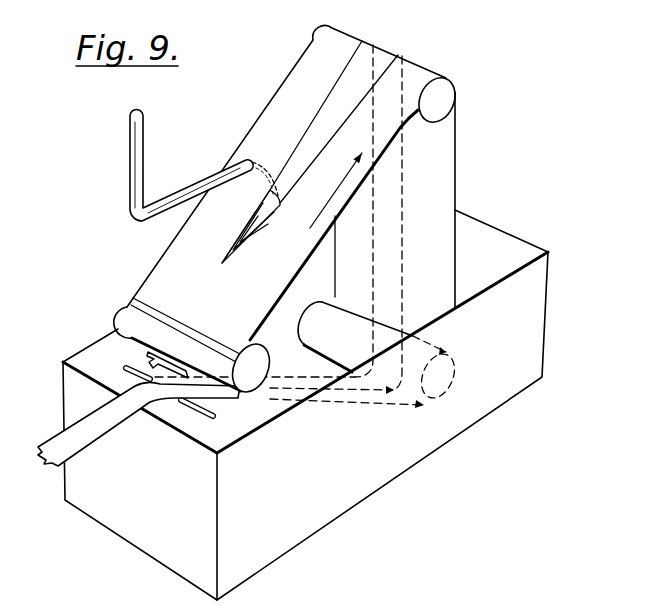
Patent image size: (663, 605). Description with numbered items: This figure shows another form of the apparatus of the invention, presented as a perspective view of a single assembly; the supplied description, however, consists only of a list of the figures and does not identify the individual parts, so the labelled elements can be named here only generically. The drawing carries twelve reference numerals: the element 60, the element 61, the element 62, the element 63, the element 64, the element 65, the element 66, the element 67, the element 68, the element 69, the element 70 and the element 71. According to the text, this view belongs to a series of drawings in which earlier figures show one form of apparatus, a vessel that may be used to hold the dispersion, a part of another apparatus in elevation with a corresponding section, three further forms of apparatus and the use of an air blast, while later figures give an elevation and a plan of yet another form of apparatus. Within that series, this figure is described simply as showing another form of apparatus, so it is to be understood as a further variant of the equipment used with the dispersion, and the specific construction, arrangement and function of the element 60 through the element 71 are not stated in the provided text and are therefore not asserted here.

The conveyor belt 60 is at (318, 244).
The lower front roller 61 is at (268, 366).
The upper roller 62 is at (420, 118).
The lower rear roller 63 is at (455, 378).
The housing block 64 is at (545, 342).
The hook arm vertical leg 65 is at (145, 121).
The hook arm horizontal leg 66 is at (172, 196).
The guide strip on belt 67 is at (330, 99).
The workpiece strip 68 is at (97, 447).
The cut-off piece 69 is at (146, 351).
The guide pin 70 is at (125, 376).
The guide rail 71 is at (171, 320).